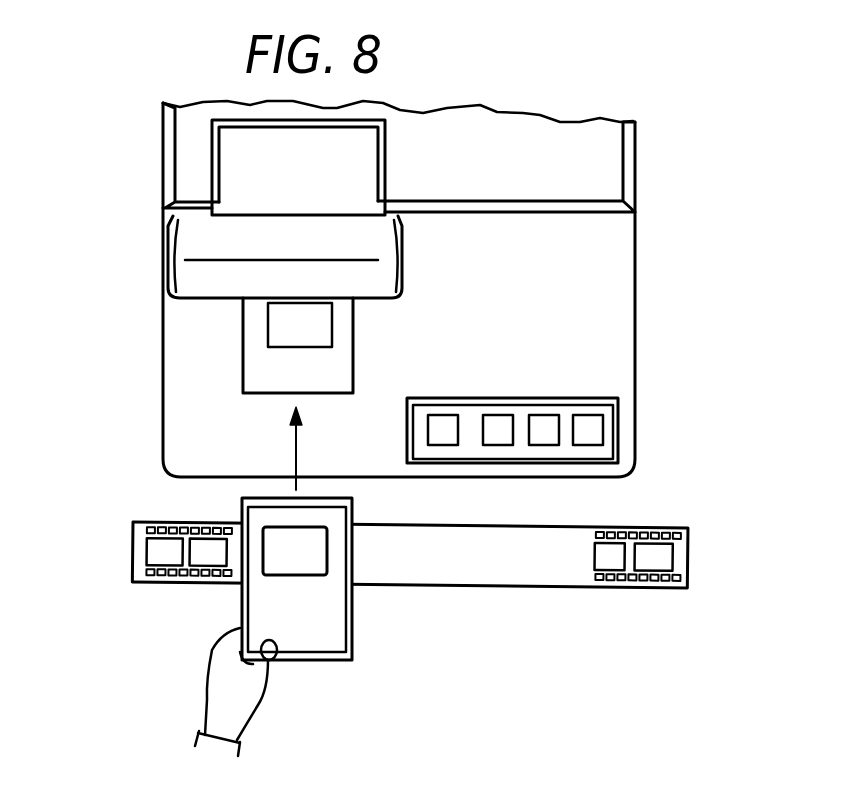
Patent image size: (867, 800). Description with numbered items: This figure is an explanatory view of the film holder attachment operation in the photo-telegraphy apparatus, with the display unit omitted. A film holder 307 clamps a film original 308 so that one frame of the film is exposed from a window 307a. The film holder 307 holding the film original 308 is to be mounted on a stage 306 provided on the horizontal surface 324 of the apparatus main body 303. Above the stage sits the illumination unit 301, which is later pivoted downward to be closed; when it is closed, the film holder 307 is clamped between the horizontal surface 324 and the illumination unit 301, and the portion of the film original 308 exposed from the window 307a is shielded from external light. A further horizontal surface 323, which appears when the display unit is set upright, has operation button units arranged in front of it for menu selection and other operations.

The illumination unit 301 is at (190, 241).
The apparatus main body 303 is at (178, 152).
The stage 306 is at (255, 373).
The film holder 307 is at (332, 587).
The window 307a is at (313, 553).
The film original 308 is at (677, 527).
The horizontal surface 323 is at (623, 285).
The horizontal surface 324 is at (180, 338).